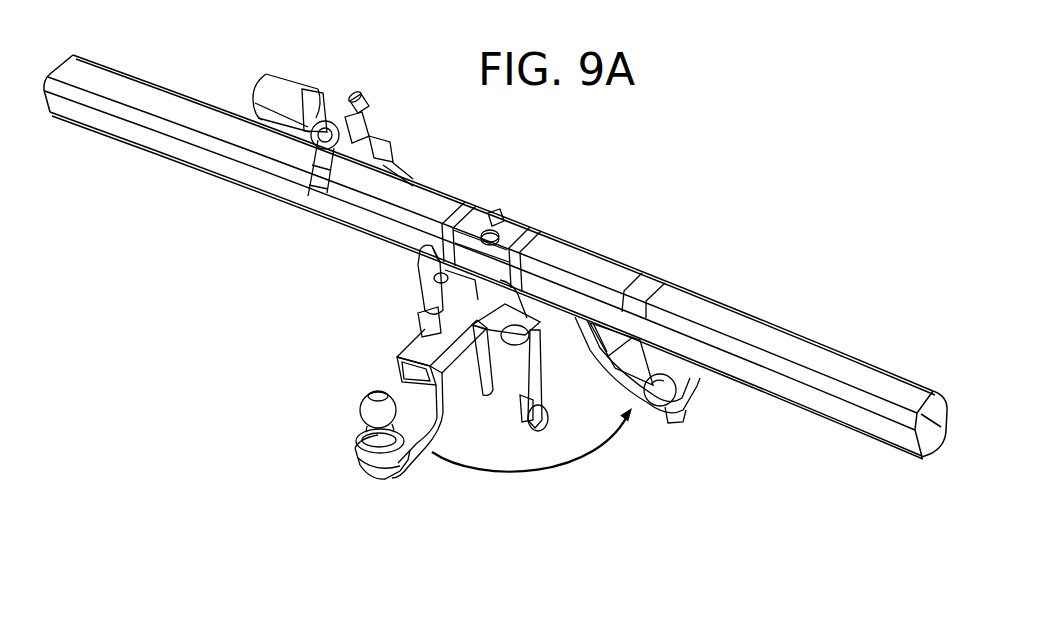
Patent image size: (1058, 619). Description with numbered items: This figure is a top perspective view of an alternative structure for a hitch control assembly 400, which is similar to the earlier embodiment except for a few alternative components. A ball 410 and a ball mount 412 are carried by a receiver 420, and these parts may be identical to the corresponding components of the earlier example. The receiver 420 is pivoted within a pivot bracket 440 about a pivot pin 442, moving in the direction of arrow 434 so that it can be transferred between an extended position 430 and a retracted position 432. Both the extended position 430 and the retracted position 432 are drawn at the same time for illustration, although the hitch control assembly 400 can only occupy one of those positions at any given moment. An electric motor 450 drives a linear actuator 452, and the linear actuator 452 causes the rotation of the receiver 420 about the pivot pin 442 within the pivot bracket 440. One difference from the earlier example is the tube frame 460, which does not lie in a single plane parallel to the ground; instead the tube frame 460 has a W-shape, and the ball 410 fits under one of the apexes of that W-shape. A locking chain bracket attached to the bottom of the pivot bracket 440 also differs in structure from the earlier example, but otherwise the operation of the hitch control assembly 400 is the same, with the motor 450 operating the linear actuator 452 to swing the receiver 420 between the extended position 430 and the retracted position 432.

The hitch control assembly 400 is at (832, 123).
The ball 410 is at (363, 407).
The ball mount 412 is at (409, 351).
The receiver 420 is at (472, 299).
The extended position 430 is at (437, 495).
The retracted position 432 is at (700, 438).
The arrow 434 is at (573, 461).
The pivot bracket 440 is at (438, 265).
The pivot pin 442 is at (493, 232).
The electric motor 450 is at (287, 96).
The linear actuator 452 is at (503, 202).
The tube frame 460 is at (815, 356).